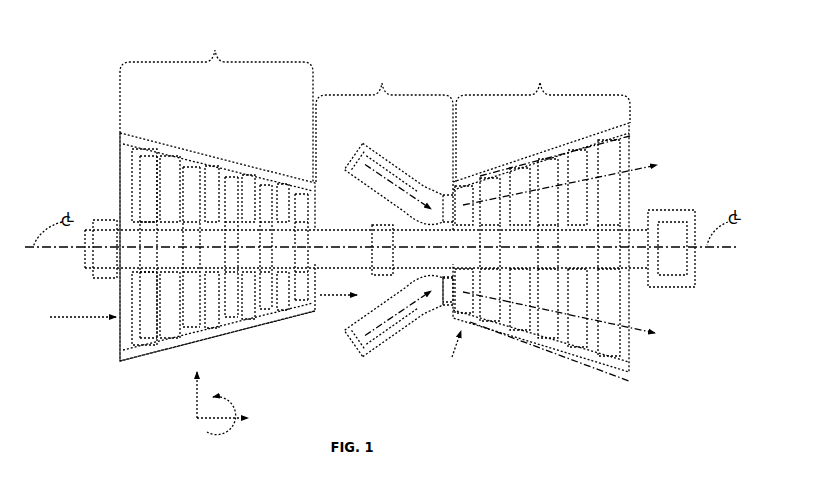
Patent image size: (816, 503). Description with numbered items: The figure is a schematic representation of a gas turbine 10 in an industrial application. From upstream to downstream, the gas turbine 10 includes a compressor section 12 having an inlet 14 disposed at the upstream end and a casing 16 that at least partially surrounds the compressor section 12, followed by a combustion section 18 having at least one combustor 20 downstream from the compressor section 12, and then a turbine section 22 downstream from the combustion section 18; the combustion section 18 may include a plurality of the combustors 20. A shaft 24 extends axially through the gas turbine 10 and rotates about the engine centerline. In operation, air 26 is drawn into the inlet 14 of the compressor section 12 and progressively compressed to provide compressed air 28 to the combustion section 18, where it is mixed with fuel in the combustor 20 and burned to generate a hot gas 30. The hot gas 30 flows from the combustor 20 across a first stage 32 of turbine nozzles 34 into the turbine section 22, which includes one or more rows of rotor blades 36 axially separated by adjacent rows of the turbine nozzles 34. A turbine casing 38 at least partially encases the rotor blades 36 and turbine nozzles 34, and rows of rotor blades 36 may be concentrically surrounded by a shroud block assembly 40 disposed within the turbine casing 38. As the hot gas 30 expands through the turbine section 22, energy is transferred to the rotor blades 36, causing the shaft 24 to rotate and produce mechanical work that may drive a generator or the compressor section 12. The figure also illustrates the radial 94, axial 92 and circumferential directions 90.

The gas turbine 10 is at (349, 31).
The compressor section 12 is at (217, 195).
The inlet 14 is at (116, 174).
The casing 16 is at (127, 361).
The combustion section 18 is at (384, 120).
The combustor 20 is at (373, 147).
The turbine section 22 is at (541, 216).
The shaft 24 is at (649, 229).
The air 26 is at (90, 313).
The compressed air 28 is at (325, 292).
The hot gas 30 is at (393, 164).
The first stage 32 is at (452, 324).
The turbine nozzles 34 is at (517, 165).
The rotor blades 36 is at (474, 329).
The turbine casing 38 is at (588, 368).
The shroud block assembly 40 is at (545, 147).
The circumferential direction 90 is at (205, 432).
The axial direction 92 is at (240, 410).
The radial direction 94 is at (193, 392).